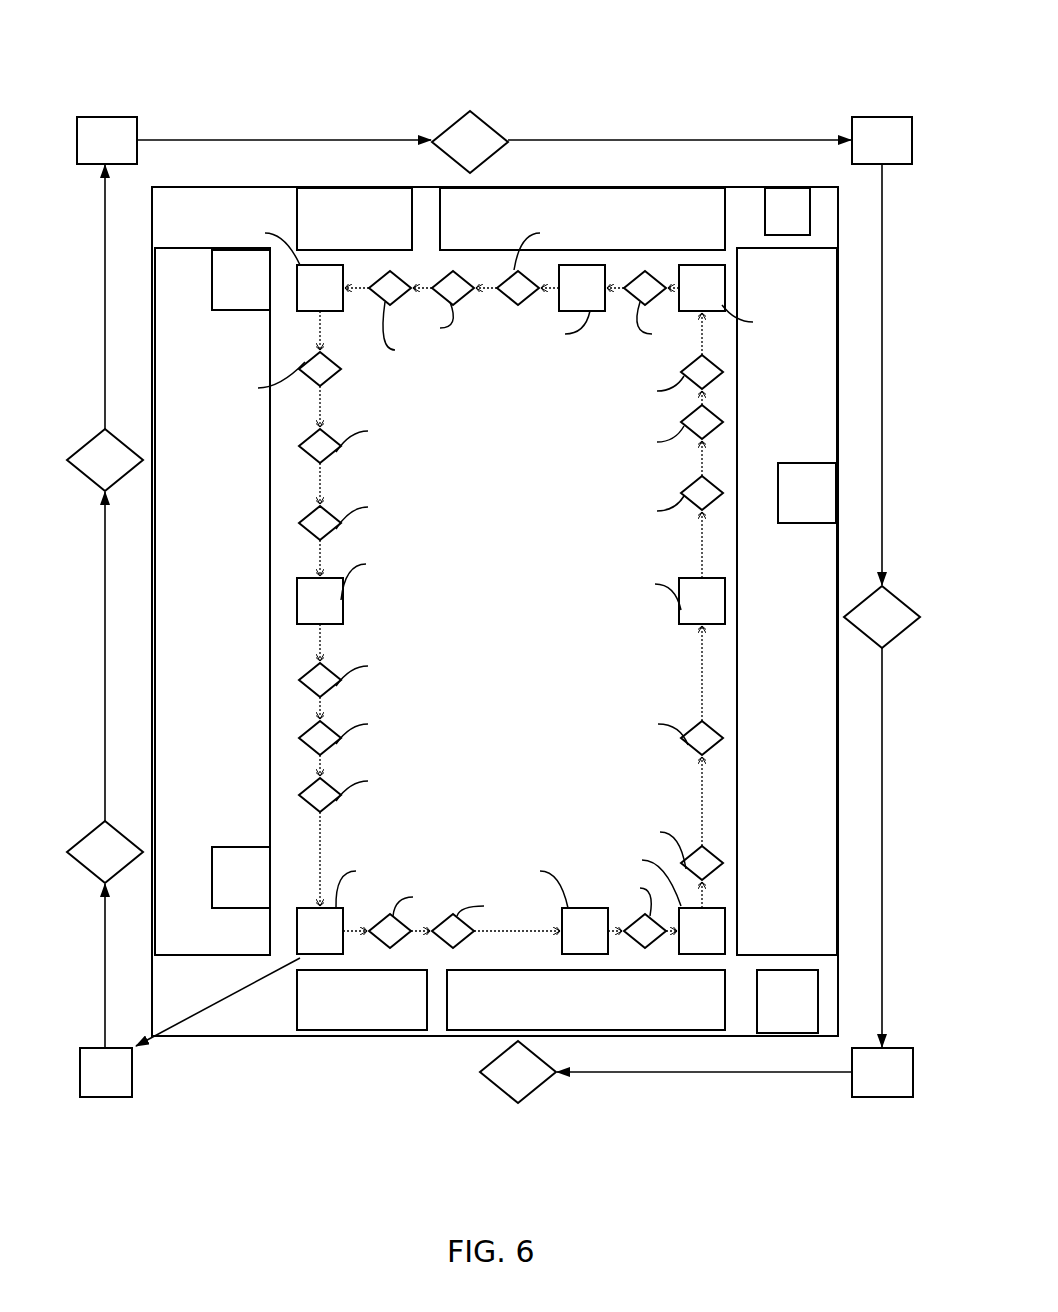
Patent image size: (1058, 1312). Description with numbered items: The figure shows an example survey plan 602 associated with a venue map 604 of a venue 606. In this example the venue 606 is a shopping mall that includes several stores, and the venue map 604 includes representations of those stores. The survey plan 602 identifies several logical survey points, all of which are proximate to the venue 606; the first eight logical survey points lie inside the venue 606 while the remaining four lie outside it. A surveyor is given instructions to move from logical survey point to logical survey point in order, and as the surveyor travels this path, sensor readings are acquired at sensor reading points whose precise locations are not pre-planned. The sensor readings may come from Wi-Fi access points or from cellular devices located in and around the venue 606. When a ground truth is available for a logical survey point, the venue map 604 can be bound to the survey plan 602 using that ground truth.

The survey plan 602 is at (493, 558).
The venue map 604 is at (577, 127).
The venue 606 is at (578, 182).